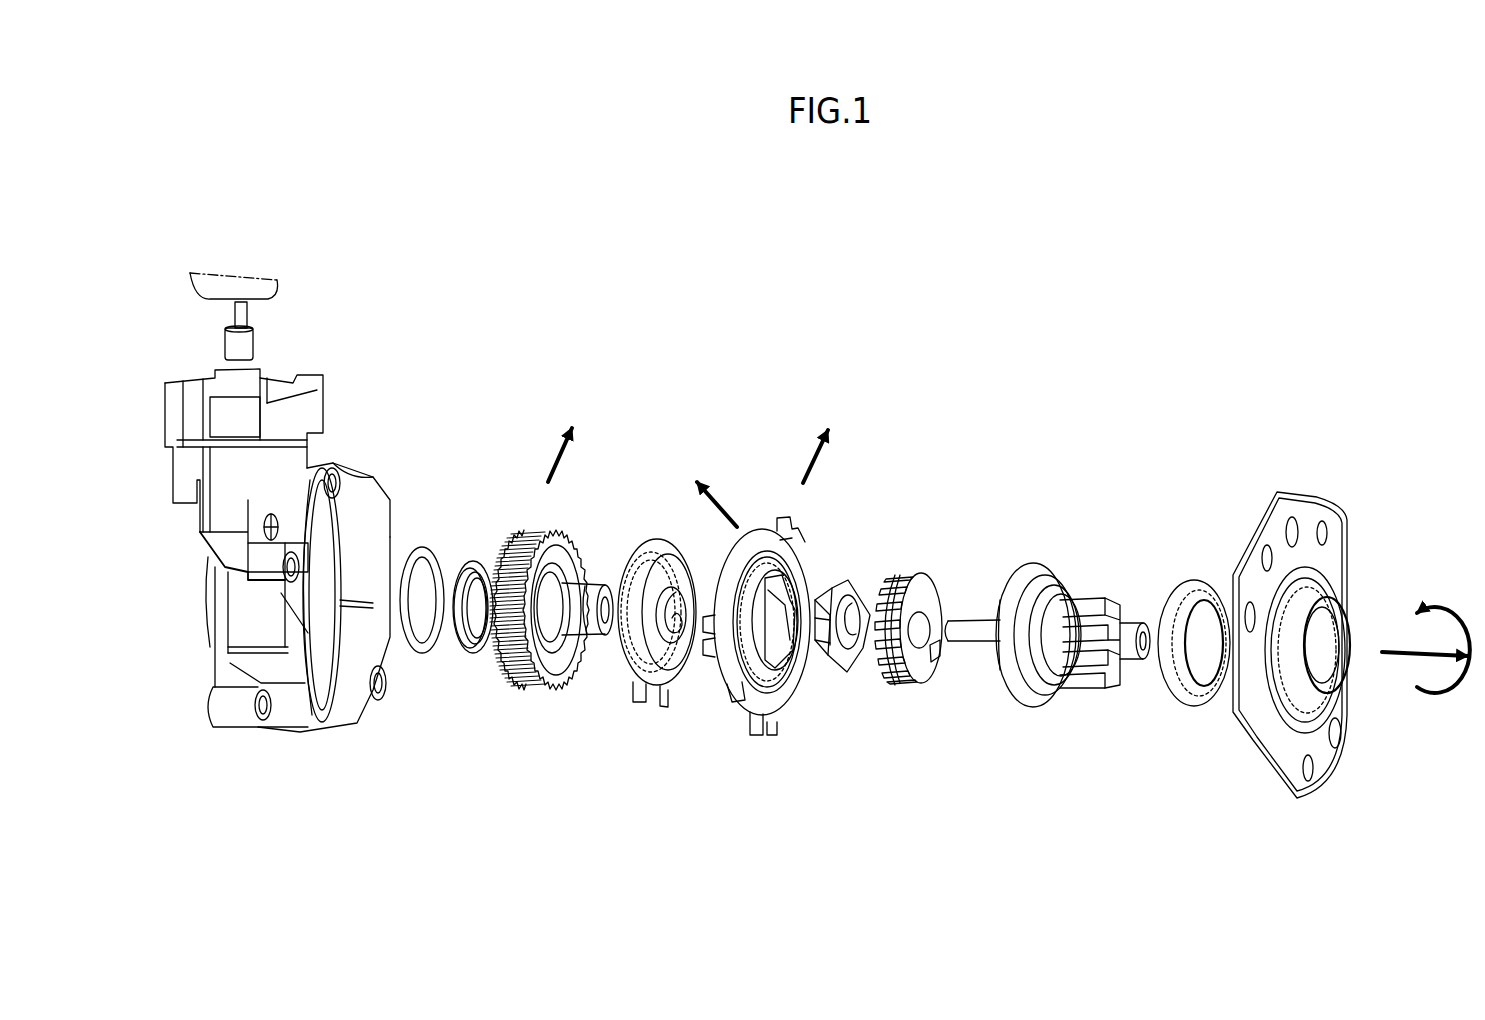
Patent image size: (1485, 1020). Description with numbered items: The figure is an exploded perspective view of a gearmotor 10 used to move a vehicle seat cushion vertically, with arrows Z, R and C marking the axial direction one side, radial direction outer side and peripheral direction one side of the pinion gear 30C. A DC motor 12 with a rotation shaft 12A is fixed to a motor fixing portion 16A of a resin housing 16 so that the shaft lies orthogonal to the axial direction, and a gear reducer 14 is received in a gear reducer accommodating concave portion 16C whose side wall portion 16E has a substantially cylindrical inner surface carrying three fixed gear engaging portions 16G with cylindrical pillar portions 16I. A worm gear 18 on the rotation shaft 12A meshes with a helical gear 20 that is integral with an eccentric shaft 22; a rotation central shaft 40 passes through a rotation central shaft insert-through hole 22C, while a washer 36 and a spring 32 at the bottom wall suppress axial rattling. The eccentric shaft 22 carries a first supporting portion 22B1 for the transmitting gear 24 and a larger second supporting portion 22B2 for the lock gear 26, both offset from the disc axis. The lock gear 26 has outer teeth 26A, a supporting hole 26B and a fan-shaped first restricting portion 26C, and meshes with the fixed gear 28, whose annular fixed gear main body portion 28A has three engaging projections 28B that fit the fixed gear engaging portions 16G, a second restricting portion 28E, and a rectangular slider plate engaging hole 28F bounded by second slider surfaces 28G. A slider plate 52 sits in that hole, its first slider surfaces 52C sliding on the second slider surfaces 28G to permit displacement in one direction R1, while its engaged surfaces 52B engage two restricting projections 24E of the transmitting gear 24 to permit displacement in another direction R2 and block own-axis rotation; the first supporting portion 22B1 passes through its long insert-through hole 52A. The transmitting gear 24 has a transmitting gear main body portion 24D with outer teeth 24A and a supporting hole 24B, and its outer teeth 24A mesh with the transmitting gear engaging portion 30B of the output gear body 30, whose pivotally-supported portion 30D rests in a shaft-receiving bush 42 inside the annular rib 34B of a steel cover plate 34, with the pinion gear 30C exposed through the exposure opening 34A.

The gearmotor 10 is at (975, 297).
The motor 12 is at (278, 283).
The rotation shaft 12A is at (228, 313).
The gear reducer 14 is at (998, 378).
The housing 16 is at (283, 592).
The motor fixing portion 16A is at (173, 465).
The gear reducer accommodating concave portion 16C is at (355, 698).
The side wall portion 16E is at (357, 653).
The fixed gear engaging portions 16G is at (390, 517).
The pillar portions 16I is at (385, 513).
The worm gear 18 is at (256, 338).
The helical gear 20 is at (525, 535).
The eccentric shaft 22 is at (571, 619).
The first supporting portion 22B1 is at (605, 585).
The second supporting portion 22B2 is at (550, 685).
The rotation central shaft insert-through hole 22C is at (612, 640).
The transmitting gear 24 is at (955, 606).
The outer teeth 24A is at (910, 572).
The supporting hole 24B is at (930, 665).
The transmitting gear main body portion 24D is at (912, 662).
The restricting projections 24E is at (900, 603).
The lock gear 26 is at (675, 606).
The outer teeth 26A is at (658, 562).
The supporting hole 26B is at (675, 692).
The first restricting portion 26C is at (650, 696).
The fixed gear 28 is at (802, 637).
The fixed gear main body portion 28A is at (790, 690).
The engaging projections 28B is at (775, 738).
The second restricting portion 28E is at (745, 720).
The slider plate engaging hole 28F is at (787, 657).
The second slider surfaces 28G is at (778, 583).
The output gear body 30 is at (1085, 587).
The transmitting gear engaging portion 30B is at (1031, 576).
The pinion gear 30C is at (1107, 605).
The pivotally-supported portion 30D is at (1062, 606).
The spring 32 is at (477, 560).
The cover plate 34 is at (1338, 679).
The exposure opening 34A is at (1334, 630).
The rib 34B is at (1352, 637).
The washer 36 is at (427, 548).
The rotation central shaft 40 is at (978, 619).
The shaft-receiving bush 42 is at (1200, 590).
The slider plate 52 is at (882, 619).
The insert-through hole 52A is at (847, 610).
The engaged surfaces 52B is at (834, 606).
The first slider surfaces 52C is at (832, 660).
The rotation radial direction outer side R is at (550, 460).
The one direction that is a radial direction R1 is at (725, 510).
The another direction that is a radial direction R2 is at (830, 458).
The rotation peripheral direction one side C is at (1383, 607).
The rotation axial direction one side Z is at (1423, 645).